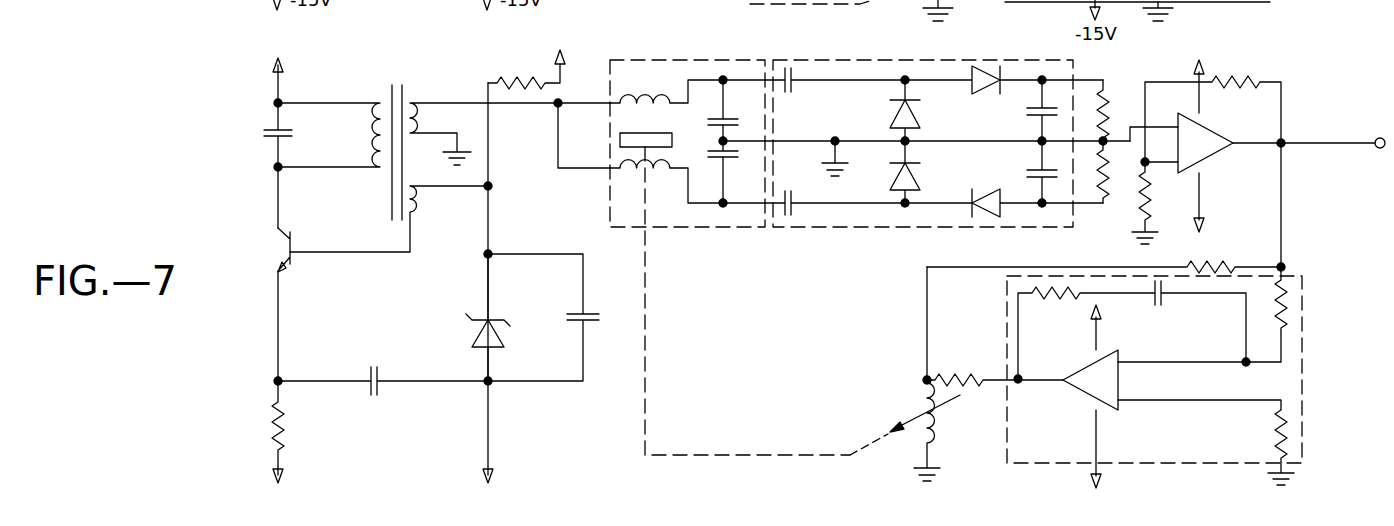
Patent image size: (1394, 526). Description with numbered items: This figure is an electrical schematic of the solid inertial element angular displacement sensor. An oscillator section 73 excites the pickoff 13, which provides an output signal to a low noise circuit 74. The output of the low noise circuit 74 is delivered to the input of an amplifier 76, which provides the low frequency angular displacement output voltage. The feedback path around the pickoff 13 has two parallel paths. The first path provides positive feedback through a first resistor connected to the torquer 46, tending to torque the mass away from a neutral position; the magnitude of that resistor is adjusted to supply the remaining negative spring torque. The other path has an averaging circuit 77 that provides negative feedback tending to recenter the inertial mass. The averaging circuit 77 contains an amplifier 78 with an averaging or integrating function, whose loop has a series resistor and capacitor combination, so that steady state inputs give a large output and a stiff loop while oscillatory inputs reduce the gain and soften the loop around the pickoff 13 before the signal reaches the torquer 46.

The oscillator section 73 is at (244, 315).
The pickoff 13 is at (655, 60).
The low noise circuit 74 is at (960, 60).
The amplifier 76 is at (1208, 128).
The averaging circuit 77 is at (1302, 368).
The amplifier 78 is at (1078, 395).
The torquer 46 is at (920, 402).